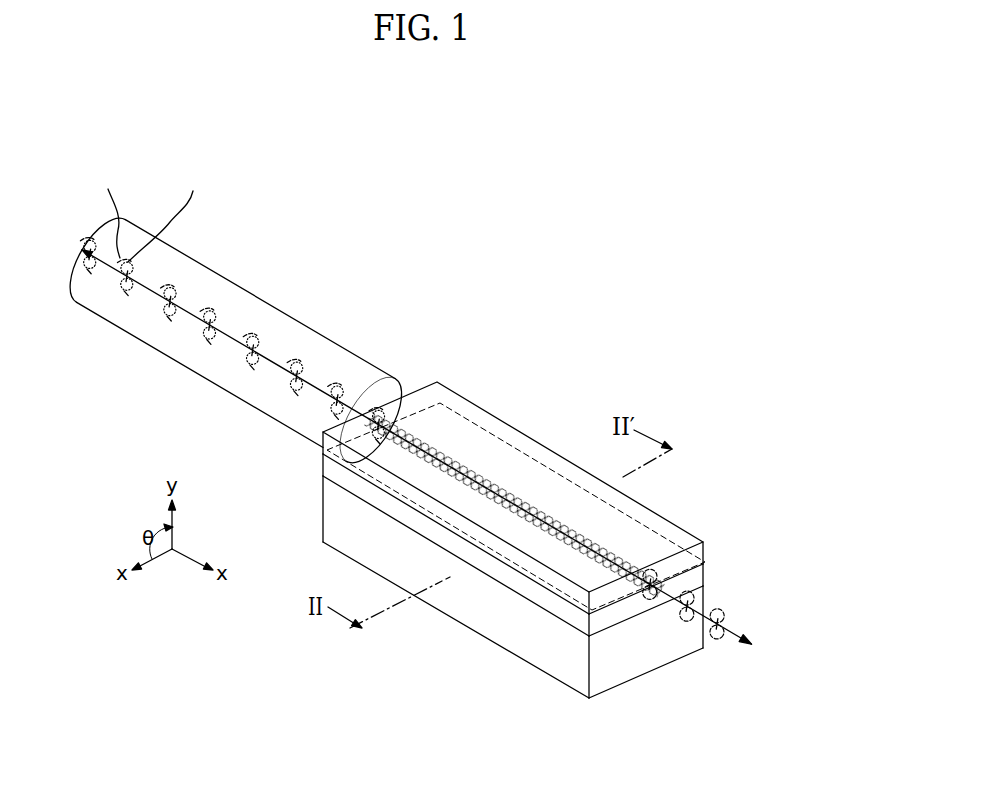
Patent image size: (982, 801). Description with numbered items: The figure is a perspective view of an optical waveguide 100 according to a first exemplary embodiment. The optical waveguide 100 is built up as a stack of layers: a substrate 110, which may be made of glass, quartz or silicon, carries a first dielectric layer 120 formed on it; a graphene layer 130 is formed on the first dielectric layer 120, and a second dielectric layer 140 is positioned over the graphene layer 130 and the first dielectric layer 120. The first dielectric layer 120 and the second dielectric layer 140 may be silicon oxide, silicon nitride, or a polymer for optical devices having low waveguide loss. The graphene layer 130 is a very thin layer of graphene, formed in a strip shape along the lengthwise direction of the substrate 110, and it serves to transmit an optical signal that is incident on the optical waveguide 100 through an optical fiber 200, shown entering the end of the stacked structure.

The optical waveguide 100 is at (550, 529).
The substrate 110 is at (640, 657).
The first dielectric layer 120 is at (693, 579).
The graphene layer 130 is at (464, 465).
The second dielectric layer 140 is at (693, 551).
The optical fiber 200 is at (283, 313).